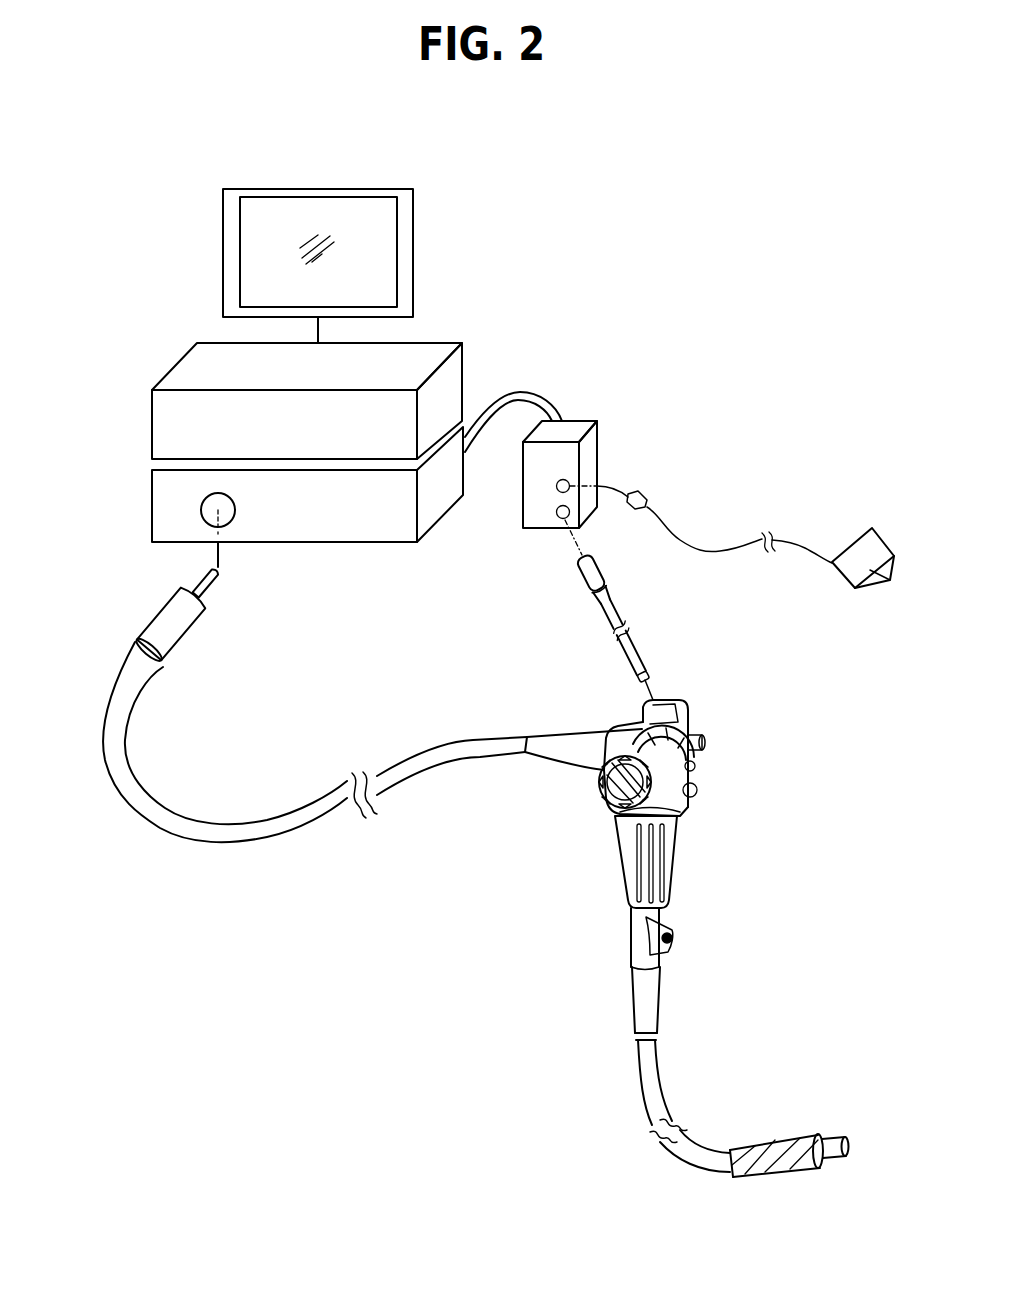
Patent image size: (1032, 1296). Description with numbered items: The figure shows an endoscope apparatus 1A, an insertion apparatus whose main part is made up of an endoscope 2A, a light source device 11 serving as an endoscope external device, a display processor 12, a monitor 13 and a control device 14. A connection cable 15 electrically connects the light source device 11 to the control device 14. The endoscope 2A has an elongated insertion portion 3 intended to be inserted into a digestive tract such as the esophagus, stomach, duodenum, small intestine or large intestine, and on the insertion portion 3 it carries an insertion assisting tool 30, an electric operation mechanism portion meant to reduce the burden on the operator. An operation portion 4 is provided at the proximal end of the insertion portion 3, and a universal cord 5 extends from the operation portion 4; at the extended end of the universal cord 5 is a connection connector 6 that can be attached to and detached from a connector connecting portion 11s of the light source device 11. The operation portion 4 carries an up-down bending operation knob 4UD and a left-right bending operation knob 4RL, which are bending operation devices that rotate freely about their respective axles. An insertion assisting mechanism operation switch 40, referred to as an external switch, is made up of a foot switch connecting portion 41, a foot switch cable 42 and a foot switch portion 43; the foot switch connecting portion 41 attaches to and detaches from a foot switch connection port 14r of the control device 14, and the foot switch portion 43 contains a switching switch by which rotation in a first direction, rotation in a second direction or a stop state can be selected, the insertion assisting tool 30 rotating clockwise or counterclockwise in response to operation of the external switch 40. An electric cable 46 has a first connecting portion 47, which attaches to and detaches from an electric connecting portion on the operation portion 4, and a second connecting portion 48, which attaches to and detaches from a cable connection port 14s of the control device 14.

The endoscope apparatus 1A is at (623, 252).
The endoscope 2A is at (745, 740).
The insertion portion 3 is at (740, 1072).
The operation portion 4 is at (674, 825).
The left-right bending operation knob 4RL is at (615, 818).
The up-down bending operation knob 4UD is at (673, 820).
The universal cord 5 is at (252, 838).
The connection connector 6 is at (178, 640).
The light source device 11 is at (157, 485).
The connector connecting portion 11s is at (202, 506).
The display processor 12 is at (178, 378).
The monitor 13 is at (410, 255).
The control device 14 is at (576, 420).
The foot switch connection port 14r is at (556, 486).
The cable connection port 14s is at (556, 512).
The connection cable 15 is at (512, 394).
The insertion assisting tool 30 is at (789, 1134).
The insertion assisting mechanism operation switch 40 is at (758, 485).
The foot switch connecting portion 41 is at (645, 492).
The foot switch cable 42 is at (735, 553).
The foot switch portion 43 is at (856, 547).
The electric cable 46 is at (646, 604).
The first connecting portion 47 is at (643, 677).
The second connecting portion 48 is at (594, 579).